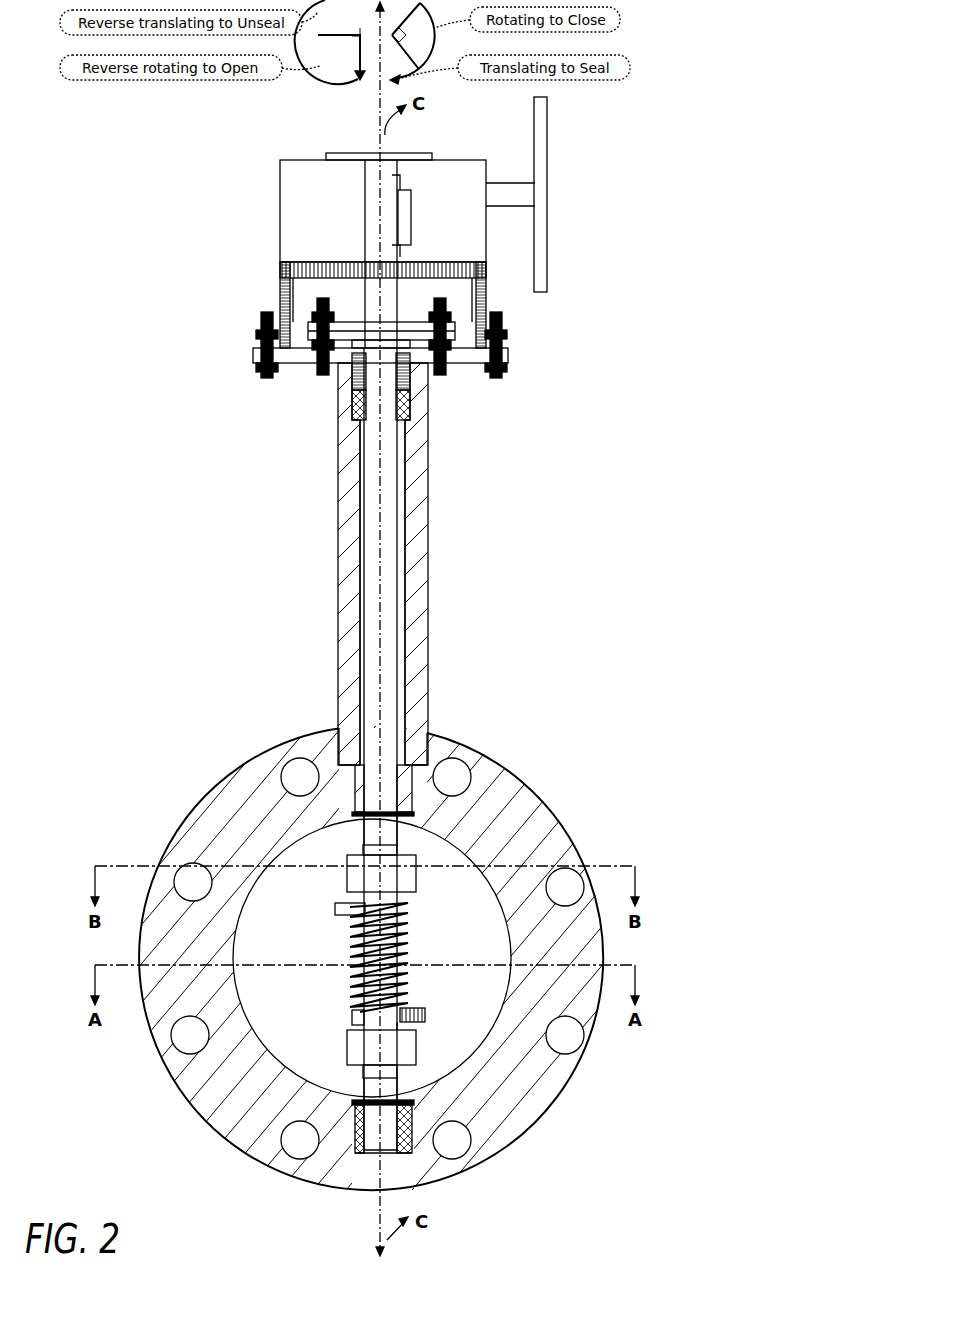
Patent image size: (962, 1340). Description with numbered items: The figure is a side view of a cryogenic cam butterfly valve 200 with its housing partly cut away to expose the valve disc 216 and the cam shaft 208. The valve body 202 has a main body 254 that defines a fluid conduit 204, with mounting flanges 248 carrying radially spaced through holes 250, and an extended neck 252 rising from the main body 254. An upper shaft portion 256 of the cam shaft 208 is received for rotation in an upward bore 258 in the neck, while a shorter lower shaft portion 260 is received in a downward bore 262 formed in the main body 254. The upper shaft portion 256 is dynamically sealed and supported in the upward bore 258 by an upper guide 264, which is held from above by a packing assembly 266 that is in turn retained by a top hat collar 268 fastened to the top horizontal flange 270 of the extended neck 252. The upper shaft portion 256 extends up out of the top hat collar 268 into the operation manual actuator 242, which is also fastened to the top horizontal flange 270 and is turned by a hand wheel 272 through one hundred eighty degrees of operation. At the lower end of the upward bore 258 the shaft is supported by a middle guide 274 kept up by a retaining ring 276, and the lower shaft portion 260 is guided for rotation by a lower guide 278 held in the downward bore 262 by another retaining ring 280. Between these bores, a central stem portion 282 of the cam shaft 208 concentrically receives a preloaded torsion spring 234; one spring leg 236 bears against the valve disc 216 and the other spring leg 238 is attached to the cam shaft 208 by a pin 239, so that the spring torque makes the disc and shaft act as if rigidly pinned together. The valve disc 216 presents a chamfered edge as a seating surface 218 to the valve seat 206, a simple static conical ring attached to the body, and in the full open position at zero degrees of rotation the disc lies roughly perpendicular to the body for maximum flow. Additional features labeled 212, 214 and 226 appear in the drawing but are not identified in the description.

The cryogenic cam butterfly valve 200 is at (216, 792).
The valve body 202 is at (186, 835).
The fluid conduit 204 is at (440, 1055).
The valve seat 206 is at (415, 840).
The cam shaft 208 is at (405, 828).
The nut 212 is at (418, 866).
The key 214 is at (388, 140).
The valve disc 216 is at (278, 1018).
The seating surface 218 is at (426, 1015).
The stem 226 is at (375, 106).
The torsion spring 234 is at (410, 968).
The spring leg 236 is at (345, 910).
The spring leg 238 is at (350, 1024).
The pin 239 is at (420, 1040).
The operation manual actuator 242 is at (281, 160).
The mounting flanges 248 is at (215, 1010).
The through holes 250 is at (500, 1162).
The extended neck 252 is at (429, 590).
The main body 254 is at (500, 770).
The upper shaft portion 256 is at (398, 525).
The upward bore 258 is at (404, 690).
The lower shaft portion 260 is at (345, 1150).
The downward bore 262 is at (378, 1172).
The upper guide 264 is at (418, 404).
The packing assembly 266 is at (418, 392).
The top hat collar 268 is at (310, 330).
The top horizontal flange 270 is at (283, 365).
The hand wheel 272 is at (548, 288).
The middle guide 274 is at (356, 768).
The retaining ring 276 is at (430, 804).
The lower guide 278 is at (362, 1160).
The retaining ring 280 is at (355, 1108).
The central stem portion 282 is at (408, 905).